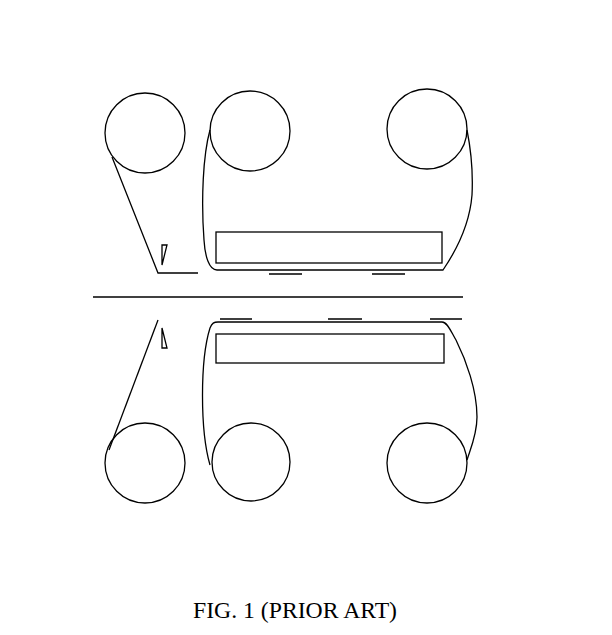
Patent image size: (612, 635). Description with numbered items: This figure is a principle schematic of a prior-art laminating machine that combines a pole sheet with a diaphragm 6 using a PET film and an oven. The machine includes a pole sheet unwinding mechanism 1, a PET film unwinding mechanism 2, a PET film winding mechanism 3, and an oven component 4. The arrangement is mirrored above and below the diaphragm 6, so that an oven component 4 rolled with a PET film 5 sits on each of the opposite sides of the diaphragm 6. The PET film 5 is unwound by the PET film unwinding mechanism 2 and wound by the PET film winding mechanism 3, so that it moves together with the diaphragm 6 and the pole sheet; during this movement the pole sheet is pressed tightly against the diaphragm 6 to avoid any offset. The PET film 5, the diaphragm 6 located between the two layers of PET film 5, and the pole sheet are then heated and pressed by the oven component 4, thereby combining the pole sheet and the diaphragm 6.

The pole sheet unwinding mechanism 1 is at (128, 141).
The PET film unwinding mechanism 2 is at (267, 108).
The PET film winding mechanism 3 is at (421, 108).
The oven component 4 is at (337, 245).
The PET film 5 is at (470, 203).
The diaphragm 6 is at (463, 297).